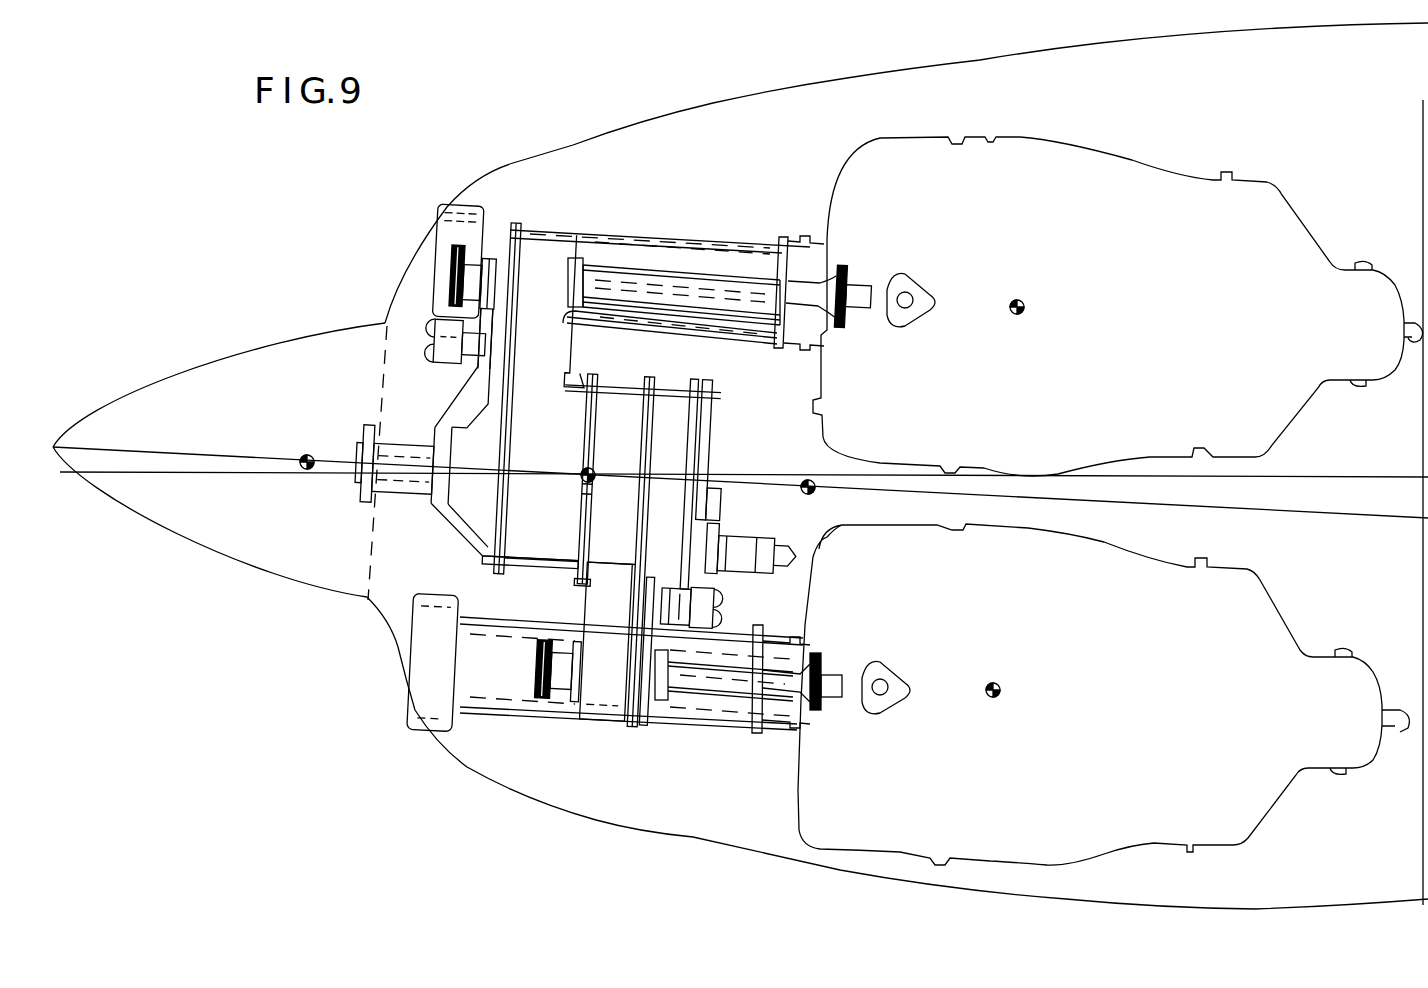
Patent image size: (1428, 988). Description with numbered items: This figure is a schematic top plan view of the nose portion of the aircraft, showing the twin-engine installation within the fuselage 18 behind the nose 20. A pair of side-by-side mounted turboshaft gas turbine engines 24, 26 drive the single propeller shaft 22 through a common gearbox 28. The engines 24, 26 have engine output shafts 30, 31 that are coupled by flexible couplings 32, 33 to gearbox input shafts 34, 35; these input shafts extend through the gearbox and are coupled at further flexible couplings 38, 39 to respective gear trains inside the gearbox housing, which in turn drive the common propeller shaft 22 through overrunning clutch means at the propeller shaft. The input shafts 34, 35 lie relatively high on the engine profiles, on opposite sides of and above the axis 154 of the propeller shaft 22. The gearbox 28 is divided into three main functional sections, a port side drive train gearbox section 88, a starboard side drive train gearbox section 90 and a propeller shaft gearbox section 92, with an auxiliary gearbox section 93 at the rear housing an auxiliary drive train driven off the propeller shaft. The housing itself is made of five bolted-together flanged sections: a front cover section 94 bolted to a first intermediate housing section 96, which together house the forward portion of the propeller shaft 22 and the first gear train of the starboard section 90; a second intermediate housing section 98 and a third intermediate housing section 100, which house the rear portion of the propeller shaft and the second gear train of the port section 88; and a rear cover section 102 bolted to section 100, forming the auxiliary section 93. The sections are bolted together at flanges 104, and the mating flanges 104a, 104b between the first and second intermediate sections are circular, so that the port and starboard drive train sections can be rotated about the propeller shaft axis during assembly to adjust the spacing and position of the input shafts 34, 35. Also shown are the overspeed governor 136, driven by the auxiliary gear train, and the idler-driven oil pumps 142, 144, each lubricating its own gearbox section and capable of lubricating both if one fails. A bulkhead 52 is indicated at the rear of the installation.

The fuselage outline 18 is at (628, 128).
The nose cone 20 is at (192, 368).
The propeller shaft 22 is at (410, 497).
The turboshaft gas turbine engine 24 is at (1118, 306).
The turboshaft gas turbine engine 26 is at (1103, 694).
The gearbox 28 is at (582, 197).
The engine output shaft 30 is at (860, 290).
The engine output shaft 31 is at (835, 676).
The flexible coupling 32 is at (837, 270).
The flexible coupling 33 is at (818, 655).
The gearbox input shaft 34 is at (708, 268).
The gearbox input shaft 35 is at (715, 718).
The flexible coupling 38 is at (450, 262).
The flexible coupling 39 is at (537, 668).
The bulkhead 52 is at (1427, 214).
The port side drive train gearbox section 88 is at (602, 726).
The starboard side drive train gearbox section 90 is at (540, 226).
The propeller shaft gearbox section 92 is at (440, 403).
The auxiliary gearbox section 93 is at (727, 510).
The front cover section 94 is at (470, 533).
The first intermediate housing section 96 is at (545, 577).
The second intermediate housing section 98 is at (597, 700).
The third intermediate housing section 100 is at (645, 725).
The rear cover section 102 is at (715, 413).
The flanges 104 is at (580, 443).
The mating flange 104a is at (577, 527).
The mating flange 104b is at (597, 530).
The overspeed governor 136 is at (772, 540).
The oil pump 142 is at (425, 345).
The oil pump 144 is at (738, 622).
The axis of propeller shaft 154 is at (283, 458).